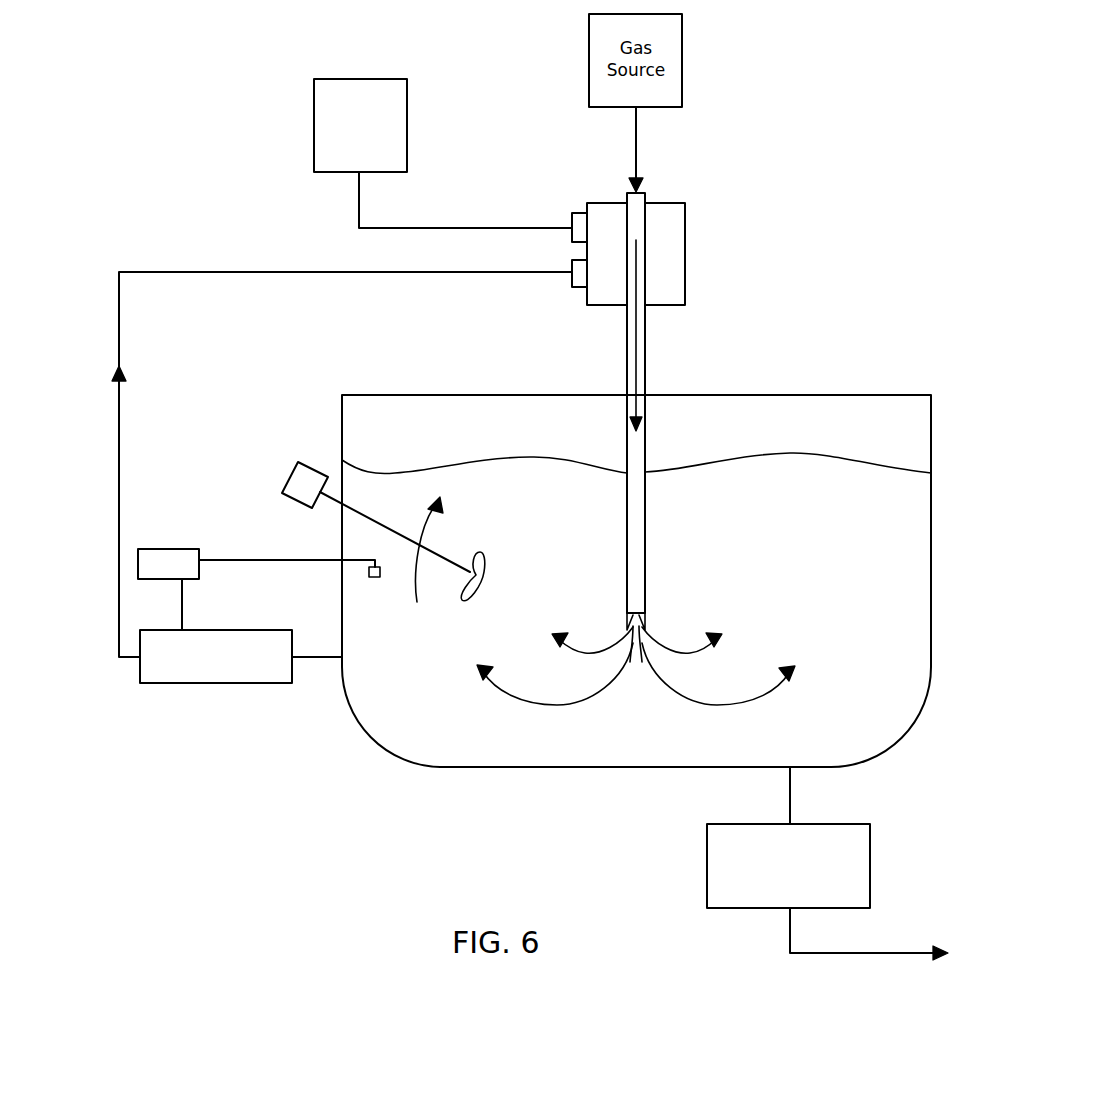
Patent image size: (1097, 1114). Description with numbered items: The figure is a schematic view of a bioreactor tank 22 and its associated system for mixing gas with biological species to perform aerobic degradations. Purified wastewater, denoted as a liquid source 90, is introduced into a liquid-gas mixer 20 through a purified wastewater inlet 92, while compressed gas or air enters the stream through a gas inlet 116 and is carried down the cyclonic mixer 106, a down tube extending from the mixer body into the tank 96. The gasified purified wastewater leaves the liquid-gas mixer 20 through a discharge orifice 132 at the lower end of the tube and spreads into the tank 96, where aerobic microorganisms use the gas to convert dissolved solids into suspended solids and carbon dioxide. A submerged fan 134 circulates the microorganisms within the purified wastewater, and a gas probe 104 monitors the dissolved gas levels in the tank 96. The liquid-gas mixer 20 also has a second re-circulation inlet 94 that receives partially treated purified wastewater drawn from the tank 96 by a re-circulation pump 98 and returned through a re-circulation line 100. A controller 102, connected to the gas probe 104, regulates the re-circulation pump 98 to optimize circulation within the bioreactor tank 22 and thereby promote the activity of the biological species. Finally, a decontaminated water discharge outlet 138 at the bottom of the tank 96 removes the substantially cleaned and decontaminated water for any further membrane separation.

The liquid-gas mixer 20 is at (716, 263).
The bioreactor tank 22 is at (856, 356).
The liquid source 90 is at (389, 79).
The purified wastewater inlet 92 is at (570, 226).
The second re-circulation inlet 94 is at (570, 276).
The tank 96 is at (404, 762).
The re-circulation pump 98 is at (150, 683).
The re-circulation line 100 is at (118, 337).
The controller 102 is at (152, 549).
The gas probe 104 is at (375, 577).
The cyclonic mixer 106 is at (645, 355).
The gas inlet 116 is at (637, 155).
The discharge orifice 132 is at (627, 612).
The fan 134 is at (487, 557).
The decontaminated water discharge outlet 138 is at (790, 786).